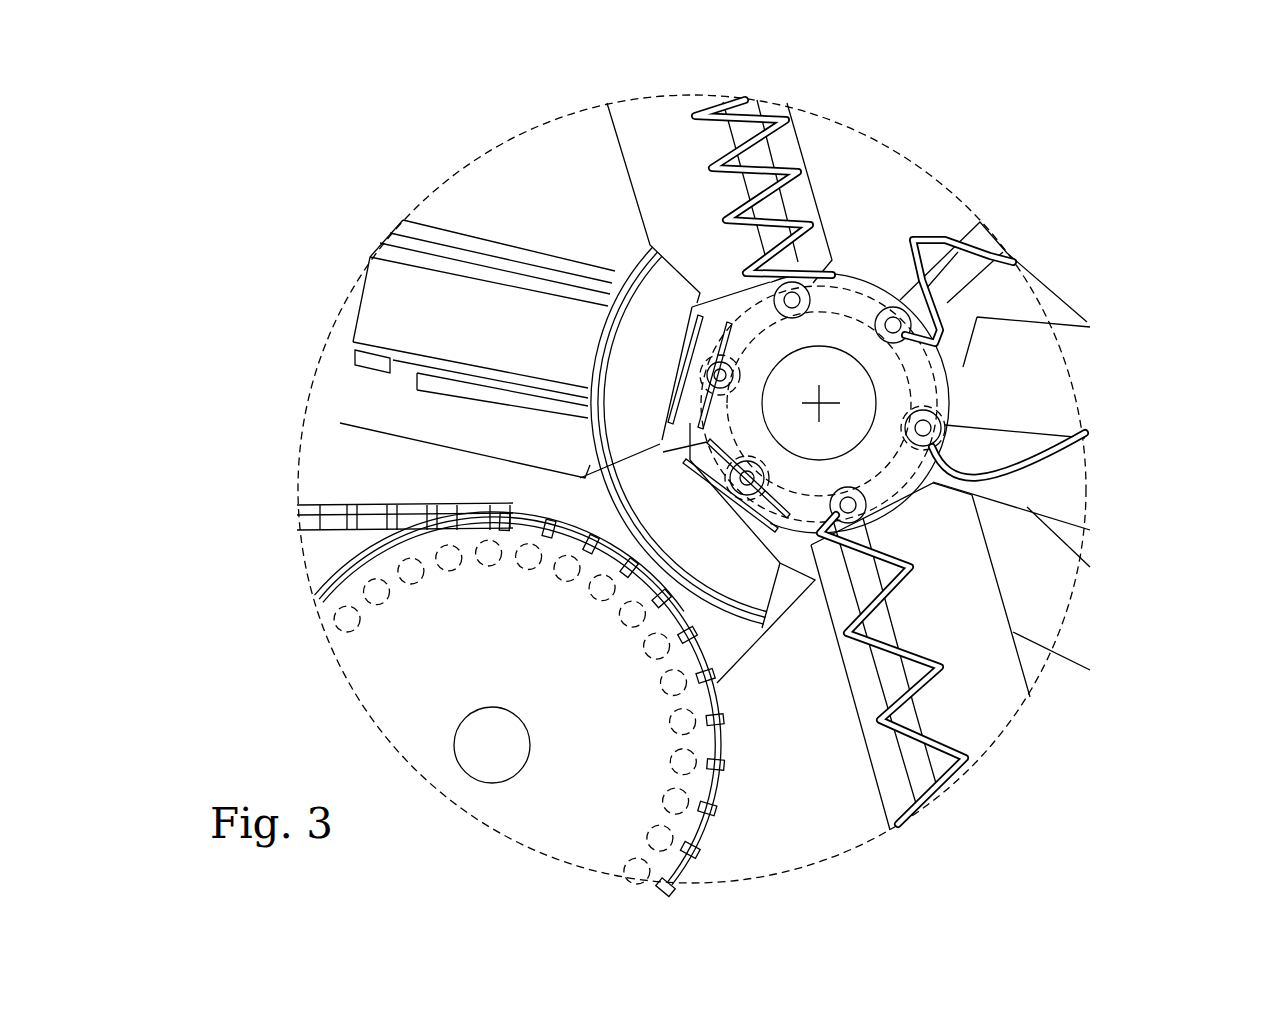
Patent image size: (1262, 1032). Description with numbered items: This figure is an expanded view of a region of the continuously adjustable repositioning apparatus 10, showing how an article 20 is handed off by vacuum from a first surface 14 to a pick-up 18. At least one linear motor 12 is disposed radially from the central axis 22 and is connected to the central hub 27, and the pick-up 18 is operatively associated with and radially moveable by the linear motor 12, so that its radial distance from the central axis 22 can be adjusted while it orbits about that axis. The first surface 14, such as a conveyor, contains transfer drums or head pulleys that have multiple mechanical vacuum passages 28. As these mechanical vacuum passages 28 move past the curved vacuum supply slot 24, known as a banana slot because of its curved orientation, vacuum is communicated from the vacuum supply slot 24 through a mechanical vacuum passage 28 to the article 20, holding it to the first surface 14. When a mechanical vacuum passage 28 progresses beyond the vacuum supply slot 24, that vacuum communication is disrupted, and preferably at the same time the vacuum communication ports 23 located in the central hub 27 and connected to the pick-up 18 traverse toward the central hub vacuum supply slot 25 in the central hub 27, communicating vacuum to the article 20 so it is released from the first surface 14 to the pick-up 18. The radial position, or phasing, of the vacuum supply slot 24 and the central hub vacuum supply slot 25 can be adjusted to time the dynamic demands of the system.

The continuously adjustable repositioning apparatus 10 is at (1056, 746).
The linear motor 12 is at (1047, 513).
The first surface 14 is at (374, 520).
The pick-up 18 is at (752, 642).
The article 20 is at (542, 503).
The central axis 22 is at (822, 402).
The vacuum communication ports 23 is at (898, 300).
The vacuum supply slot 24 is at (467, 567).
The central hub vacuum supply slot 25 is at (933, 507).
The central hub 27 is at (908, 363).
The mechanical vacuum passages 28 is at (447, 571).